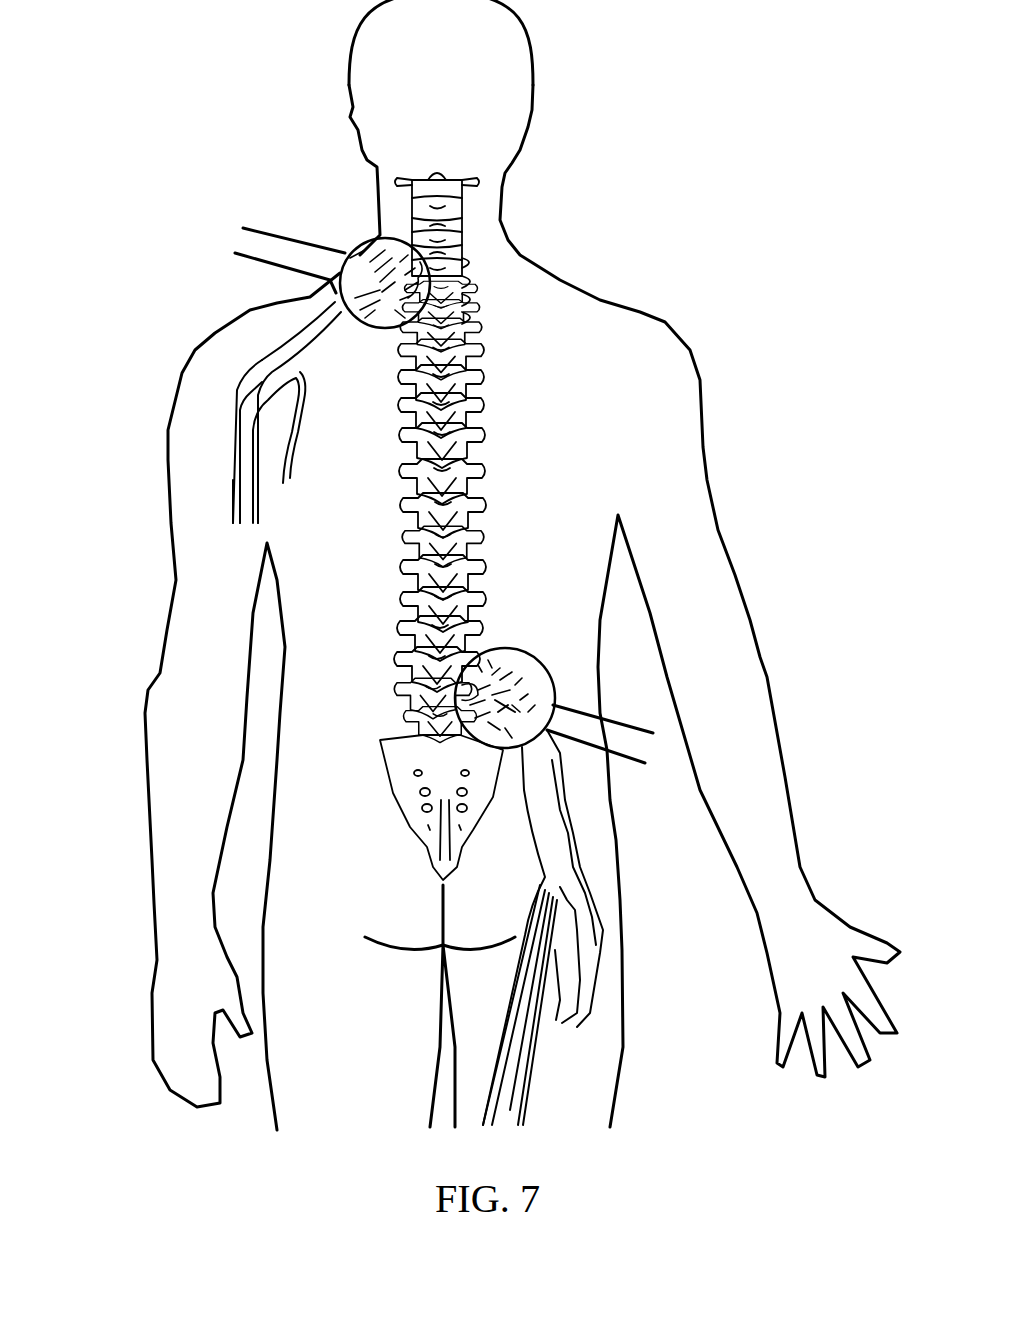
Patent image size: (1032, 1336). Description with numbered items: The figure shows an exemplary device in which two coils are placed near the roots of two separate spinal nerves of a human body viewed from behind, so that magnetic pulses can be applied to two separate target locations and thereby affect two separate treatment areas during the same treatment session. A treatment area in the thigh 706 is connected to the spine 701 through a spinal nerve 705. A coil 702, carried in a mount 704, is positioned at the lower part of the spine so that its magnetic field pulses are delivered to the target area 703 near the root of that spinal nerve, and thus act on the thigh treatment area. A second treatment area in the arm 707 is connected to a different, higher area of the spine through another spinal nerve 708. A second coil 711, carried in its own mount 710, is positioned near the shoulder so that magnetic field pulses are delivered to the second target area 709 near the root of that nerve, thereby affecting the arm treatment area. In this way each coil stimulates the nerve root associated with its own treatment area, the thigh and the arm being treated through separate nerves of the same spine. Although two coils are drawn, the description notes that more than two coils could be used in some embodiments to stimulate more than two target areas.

The spine 701 is at (452, 478).
The coil 702 is at (527, 650).
The target area 703 is at (505, 708).
The mount 704 is at (600, 716).
The spinal nerve 705 is at (537, 823).
The treatment area in the thigh 706 is at (549, 1034).
The treatment area in the arm 707 is at (235, 522).
The spinal nerve 708 is at (258, 358).
The second target area 709 is at (378, 288).
The mount 710 is at (255, 258).
The second coil 711 is at (355, 240).